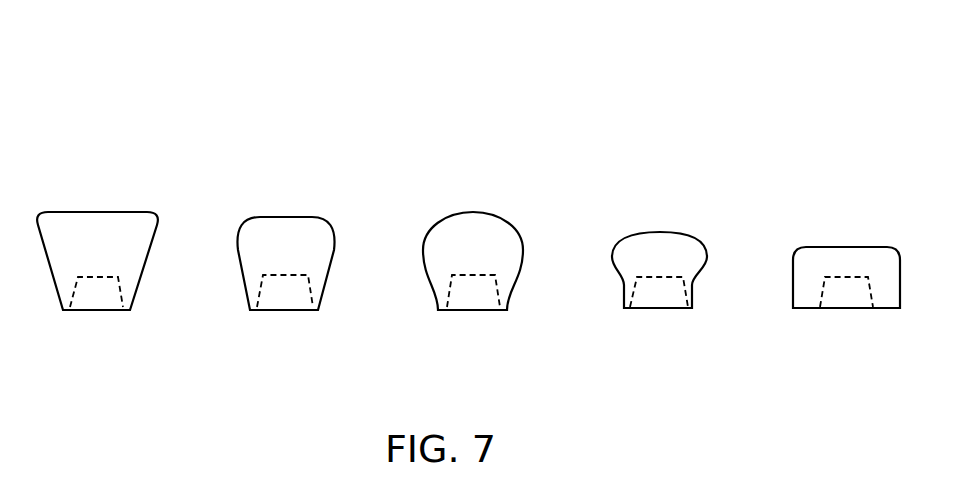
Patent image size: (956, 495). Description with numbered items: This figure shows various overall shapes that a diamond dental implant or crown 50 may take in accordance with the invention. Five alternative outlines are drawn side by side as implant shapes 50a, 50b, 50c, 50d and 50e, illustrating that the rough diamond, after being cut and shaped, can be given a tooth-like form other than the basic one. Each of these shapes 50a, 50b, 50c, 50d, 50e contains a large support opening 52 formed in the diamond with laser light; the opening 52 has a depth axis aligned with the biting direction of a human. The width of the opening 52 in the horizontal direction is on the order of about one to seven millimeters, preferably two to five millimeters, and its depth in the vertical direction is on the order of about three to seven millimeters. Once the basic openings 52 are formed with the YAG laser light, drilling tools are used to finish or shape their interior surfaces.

The gasket 50 is at (170, 73).
The gasket with trapezoidal cross-section 50a is at (97, 210).
The gasket with rounded trapezoidal cross-section 50b is at (285, 214).
The gasket with bell-shaped cross-section 50c is at (473, 210).
The gasket with mushroom-shaped cross-section 50d is at (658, 230).
The gasket with rounded rectangular cross-section 50e is at (847, 245).
The support opening 52 is at (98, 297).